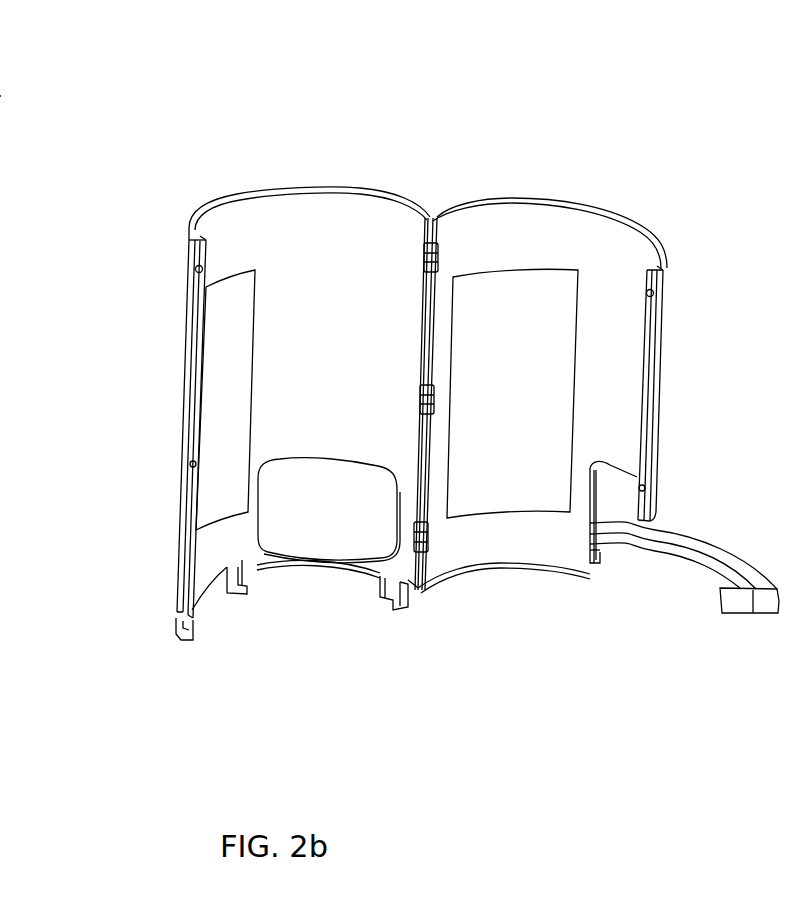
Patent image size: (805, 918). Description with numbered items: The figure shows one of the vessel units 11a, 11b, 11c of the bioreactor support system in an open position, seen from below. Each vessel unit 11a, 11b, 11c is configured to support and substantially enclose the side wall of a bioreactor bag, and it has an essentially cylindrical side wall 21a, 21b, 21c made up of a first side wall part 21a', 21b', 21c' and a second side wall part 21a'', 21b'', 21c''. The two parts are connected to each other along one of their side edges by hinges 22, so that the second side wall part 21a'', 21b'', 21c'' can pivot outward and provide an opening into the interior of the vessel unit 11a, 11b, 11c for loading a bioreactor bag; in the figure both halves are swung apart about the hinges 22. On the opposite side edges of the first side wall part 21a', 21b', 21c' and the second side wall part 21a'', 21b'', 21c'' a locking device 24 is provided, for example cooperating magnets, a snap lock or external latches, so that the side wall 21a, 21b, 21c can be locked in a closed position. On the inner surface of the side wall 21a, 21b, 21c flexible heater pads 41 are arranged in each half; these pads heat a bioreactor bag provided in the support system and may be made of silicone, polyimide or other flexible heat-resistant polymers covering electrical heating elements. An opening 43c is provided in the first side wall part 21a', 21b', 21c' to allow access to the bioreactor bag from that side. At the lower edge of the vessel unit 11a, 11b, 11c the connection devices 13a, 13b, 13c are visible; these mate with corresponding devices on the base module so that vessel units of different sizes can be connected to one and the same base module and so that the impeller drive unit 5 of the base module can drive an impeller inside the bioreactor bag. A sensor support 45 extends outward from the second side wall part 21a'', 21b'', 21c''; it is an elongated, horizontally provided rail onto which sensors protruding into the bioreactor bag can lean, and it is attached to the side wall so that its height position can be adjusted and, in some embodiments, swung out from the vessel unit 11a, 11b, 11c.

The vessel unit 11a is at (331, 343).
The vessel unit 11b is at (362, 343).
The vessel unit 11c is at (197, 152).
The side wall 21a is at (365, 152).
The side wall 21b is at (365, 152).
The side wall 21c is at (365, 152).
The first side wall part 21a' is at (309, 169).
The first side wall part 21b' is at (309, 169).
The first side wall part 21c' is at (309, 169).
The second side wall part 21a'' is at (365, 181).
The second side wall part 21b'' is at (365, 181).
The second side wall part 21c'' is at (365, 181).
The hinge 22 is at (421, 550).
The locking device 24 is at (199, 272).
The flexible heater pad 41 is at (236, 402).
The opening 43c is at (340, 535).
The connection device 13a is at (299, 643).
The connection device 13b is at (317, 643).
The connection device 13c is at (383, 606).
The sensor support 45 is at (717, 540).
The impeller drive unit 5 is at (6, 369).